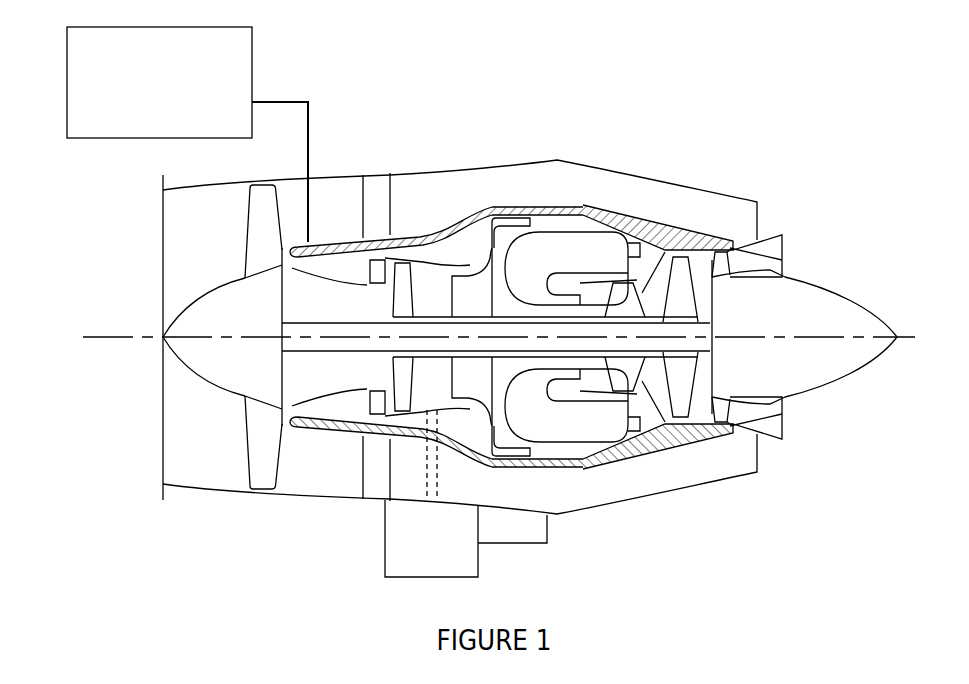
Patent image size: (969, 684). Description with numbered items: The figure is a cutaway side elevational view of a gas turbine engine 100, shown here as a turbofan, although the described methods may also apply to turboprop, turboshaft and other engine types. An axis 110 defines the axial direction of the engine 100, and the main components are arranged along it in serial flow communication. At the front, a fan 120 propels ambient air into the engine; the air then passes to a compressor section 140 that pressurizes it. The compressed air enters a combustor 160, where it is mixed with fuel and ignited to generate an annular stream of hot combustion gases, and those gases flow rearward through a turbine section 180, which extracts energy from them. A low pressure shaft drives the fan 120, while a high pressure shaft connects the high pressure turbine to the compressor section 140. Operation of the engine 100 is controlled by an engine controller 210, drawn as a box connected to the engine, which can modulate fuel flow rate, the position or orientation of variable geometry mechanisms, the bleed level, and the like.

The gas turbine engine 100 is at (668, 130).
The axis 110 is at (107, 333).
The fan 120 is at (260, 437).
The compressor section 140 is at (427, 270).
The combustor 160 is at (568, 243).
The turbine section 180 is at (655, 380).
The engine controller 210 is at (142, 107).